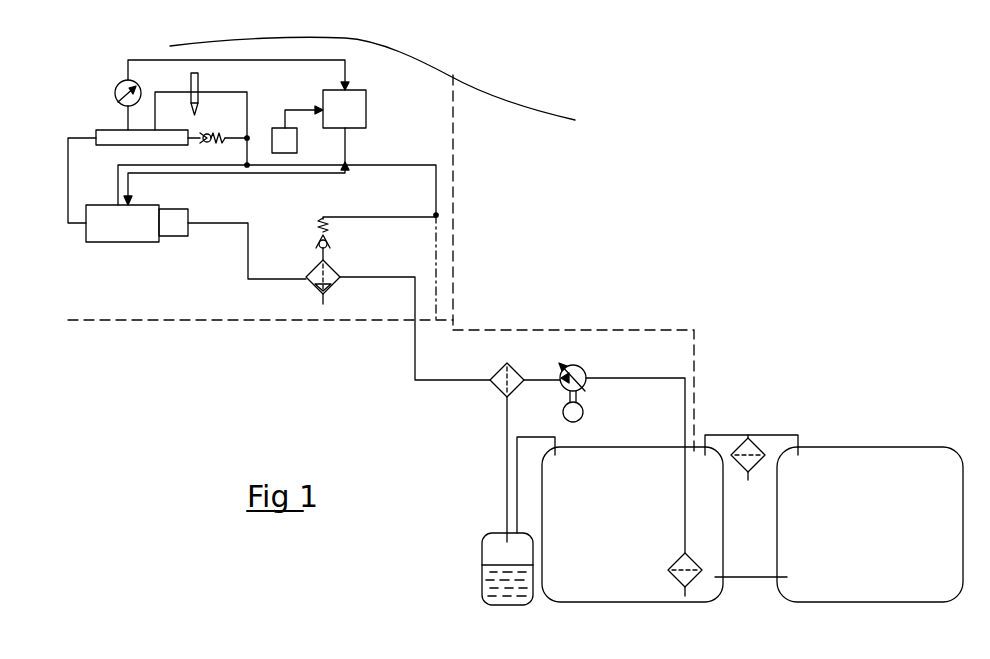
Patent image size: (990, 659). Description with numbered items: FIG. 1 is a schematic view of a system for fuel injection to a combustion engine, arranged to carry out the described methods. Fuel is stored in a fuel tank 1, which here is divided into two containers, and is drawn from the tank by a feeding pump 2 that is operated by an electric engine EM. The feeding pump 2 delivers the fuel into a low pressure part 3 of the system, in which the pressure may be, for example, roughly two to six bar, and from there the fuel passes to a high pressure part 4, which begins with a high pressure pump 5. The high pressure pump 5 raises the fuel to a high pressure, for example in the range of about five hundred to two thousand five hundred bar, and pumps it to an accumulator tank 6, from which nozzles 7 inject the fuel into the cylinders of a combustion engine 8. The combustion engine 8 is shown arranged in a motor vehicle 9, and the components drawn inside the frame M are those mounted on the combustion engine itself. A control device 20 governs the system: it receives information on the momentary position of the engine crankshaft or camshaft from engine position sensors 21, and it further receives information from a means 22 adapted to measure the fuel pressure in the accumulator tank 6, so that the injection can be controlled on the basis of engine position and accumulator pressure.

The fuel tank 1 is at (817, 447).
The feeding pump 2 is at (584, 370).
The low pressure part 3 is at (412, 353).
The high pressure part 4 is at (84, 240).
The high pressure pump 5 is at (146, 242).
The accumulator tank 6 is at (118, 146).
The nozzles 7 is at (199, 103).
The combustion engine 8 is at (240, 113).
The motor vehicle 9 is at (492, 84).
The control device 20 is at (366, 110).
The engine position sensors 21 is at (297, 142).
The means adapted to measure the fuel pressure 22 is at (138, 84).
The frame M is at (318, 324).
The electric engine EM is at (583, 412).